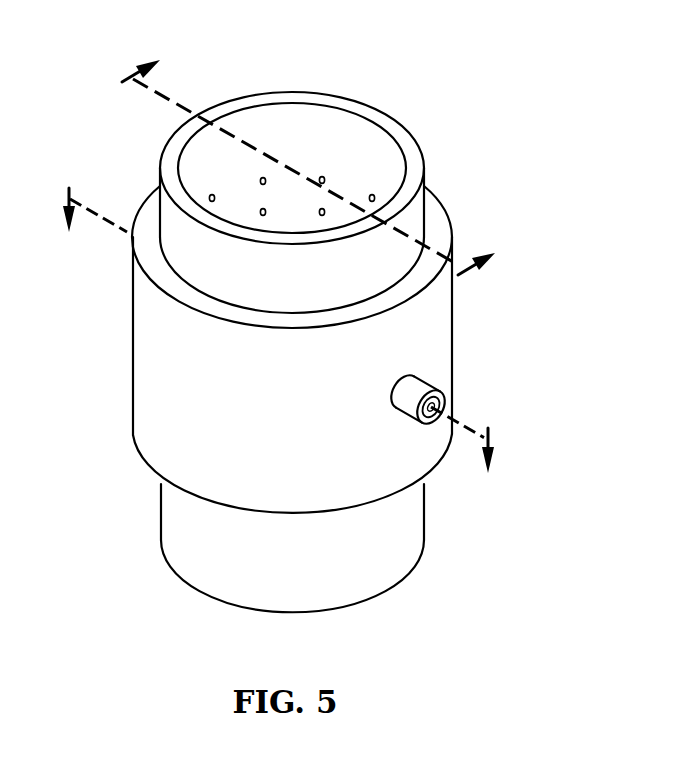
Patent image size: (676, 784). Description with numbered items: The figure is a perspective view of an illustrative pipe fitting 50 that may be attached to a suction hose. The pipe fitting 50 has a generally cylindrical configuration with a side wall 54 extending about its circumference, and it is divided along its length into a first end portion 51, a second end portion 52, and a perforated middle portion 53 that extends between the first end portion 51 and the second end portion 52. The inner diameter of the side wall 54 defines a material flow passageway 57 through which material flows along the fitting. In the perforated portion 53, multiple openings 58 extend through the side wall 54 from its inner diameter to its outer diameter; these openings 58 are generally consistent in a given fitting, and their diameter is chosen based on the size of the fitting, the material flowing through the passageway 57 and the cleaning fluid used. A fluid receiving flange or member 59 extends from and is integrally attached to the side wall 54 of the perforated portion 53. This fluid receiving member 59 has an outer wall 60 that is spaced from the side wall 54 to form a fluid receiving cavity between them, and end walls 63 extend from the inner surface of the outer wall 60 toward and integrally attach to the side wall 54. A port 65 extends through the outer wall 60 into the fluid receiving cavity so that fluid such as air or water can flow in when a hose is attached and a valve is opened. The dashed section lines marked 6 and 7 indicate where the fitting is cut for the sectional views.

The pipe fitting 50 is at (497, 188).
The first end portion 51 is at (170, 222).
The second end portion 52 is at (412, 532).
The perforated middle portion 53 is at (183, 255).
The side wall 54 is at (413, 168).
The material flow passageway 57 is at (299, 156).
The openings 58 is at (324, 208).
The fluid receiving member 59 is at (145, 340).
The outer wall 60 is at (160, 450).
The end walls 63 is at (448, 235).
The port 65 is at (420, 388).
The section line 6- 6 is at (313, 163).
The section line 7- 7 is at (277, 335).